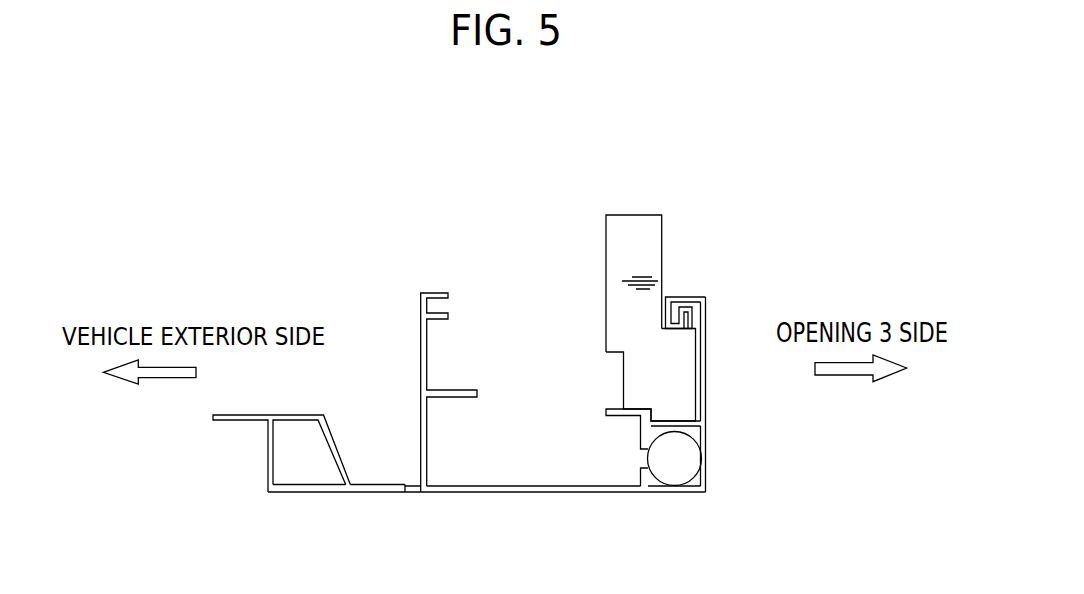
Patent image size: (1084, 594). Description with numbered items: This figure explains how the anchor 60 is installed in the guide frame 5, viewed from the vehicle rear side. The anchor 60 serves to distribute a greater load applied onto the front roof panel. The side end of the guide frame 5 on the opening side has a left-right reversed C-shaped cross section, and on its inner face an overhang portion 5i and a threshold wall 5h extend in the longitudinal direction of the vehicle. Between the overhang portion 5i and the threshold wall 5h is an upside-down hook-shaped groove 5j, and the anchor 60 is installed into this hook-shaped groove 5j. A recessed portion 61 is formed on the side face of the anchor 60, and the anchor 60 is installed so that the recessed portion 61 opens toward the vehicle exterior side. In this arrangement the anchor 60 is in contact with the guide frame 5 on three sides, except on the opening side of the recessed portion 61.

The guide frame 5 is at (712, 448).
The threshold wall 5h is at (647, 435).
The overhang portion 5i is at (693, 295).
The hook-shaped groove 5j is at (706, 338).
The anchor 60 is at (654, 208).
The recessed portion 61 is at (609, 380).